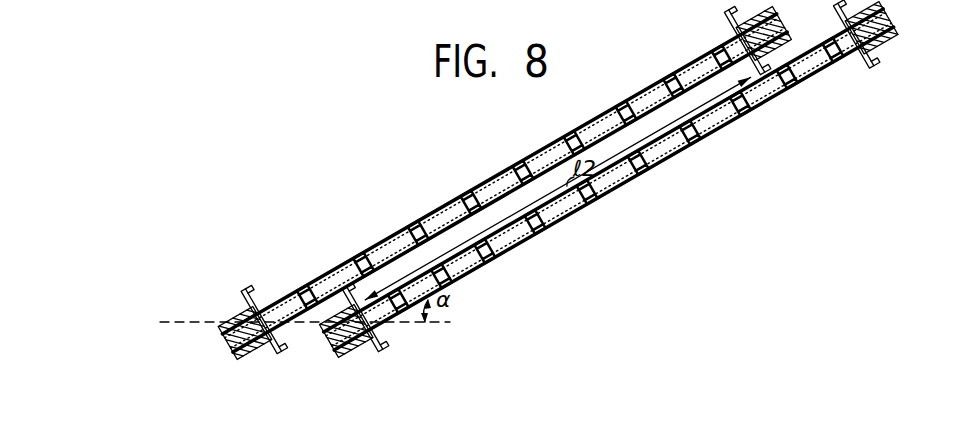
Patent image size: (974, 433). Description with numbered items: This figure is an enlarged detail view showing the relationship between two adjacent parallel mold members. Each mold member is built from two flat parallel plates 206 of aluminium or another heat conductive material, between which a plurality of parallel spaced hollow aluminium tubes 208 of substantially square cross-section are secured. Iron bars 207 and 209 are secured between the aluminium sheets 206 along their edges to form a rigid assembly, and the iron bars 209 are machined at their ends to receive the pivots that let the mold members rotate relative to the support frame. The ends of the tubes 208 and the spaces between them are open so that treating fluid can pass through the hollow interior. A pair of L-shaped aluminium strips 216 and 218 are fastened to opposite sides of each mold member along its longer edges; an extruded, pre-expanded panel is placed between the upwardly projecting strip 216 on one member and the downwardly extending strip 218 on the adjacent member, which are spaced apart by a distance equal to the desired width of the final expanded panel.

The flat parallel plates 206 is at (553, 164).
The iron bar 207 is at (853, 50).
The hollow aluminium tubes 208 is at (581, 197).
The iron bar 209 is at (348, 312).
The L-shaped aluminium strip 216 is at (282, 352).
The L-shaped aluminium strip 218 is at (739, 49).